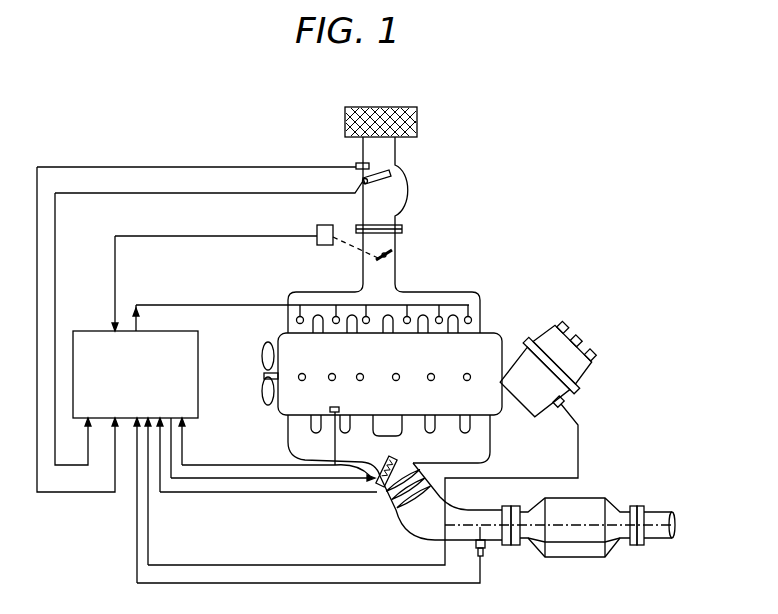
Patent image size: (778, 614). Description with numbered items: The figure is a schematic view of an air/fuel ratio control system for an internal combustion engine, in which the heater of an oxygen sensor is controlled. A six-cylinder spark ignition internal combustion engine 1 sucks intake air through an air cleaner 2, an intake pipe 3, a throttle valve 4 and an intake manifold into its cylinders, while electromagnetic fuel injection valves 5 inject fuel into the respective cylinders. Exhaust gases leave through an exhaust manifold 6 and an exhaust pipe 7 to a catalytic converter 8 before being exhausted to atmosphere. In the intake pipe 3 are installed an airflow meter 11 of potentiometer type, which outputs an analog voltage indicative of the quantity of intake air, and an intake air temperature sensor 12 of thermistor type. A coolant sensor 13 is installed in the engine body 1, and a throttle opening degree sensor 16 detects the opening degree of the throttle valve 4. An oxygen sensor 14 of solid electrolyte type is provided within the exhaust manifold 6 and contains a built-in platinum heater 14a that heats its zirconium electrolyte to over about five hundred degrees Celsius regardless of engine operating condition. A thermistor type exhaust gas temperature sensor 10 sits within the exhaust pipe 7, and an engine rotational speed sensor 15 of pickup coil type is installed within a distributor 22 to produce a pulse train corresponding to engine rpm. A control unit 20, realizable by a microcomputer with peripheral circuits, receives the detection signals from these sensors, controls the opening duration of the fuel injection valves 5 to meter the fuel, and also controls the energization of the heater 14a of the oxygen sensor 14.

The internal combustion engine 1 is at (500, 412).
The air cleaner 2 is at (400, 108).
The intake pipe 3 is at (402, 235).
The throttle valve 4 is at (392, 254).
The electromagnetic fuel injection valves 5 is at (296, 319).
The exhaust manifold 6 is at (463, 463).
The exhaust pipe 7 is at (418, 526).
The catalytic converter 8 is at (598, 498).
The exhaust gas temperature sensor 10 is at (484, 552).
The airflow meter 11 is at (380, 173).
The intake air temperature sensor 12 is at (356, 165).
The coolant sensor 13 is at (332, 413).
The oxygen sensor 14 is at (378, 488).
The platinum heater 14a is at (391, 460).
The engine rotational speed sensor 15 is at (565, 404).
The throttle opening degree sensor 16 is at (317, 230).
The control unit 20 is at (198, 342).
The distributor 22 is at (594, 353).